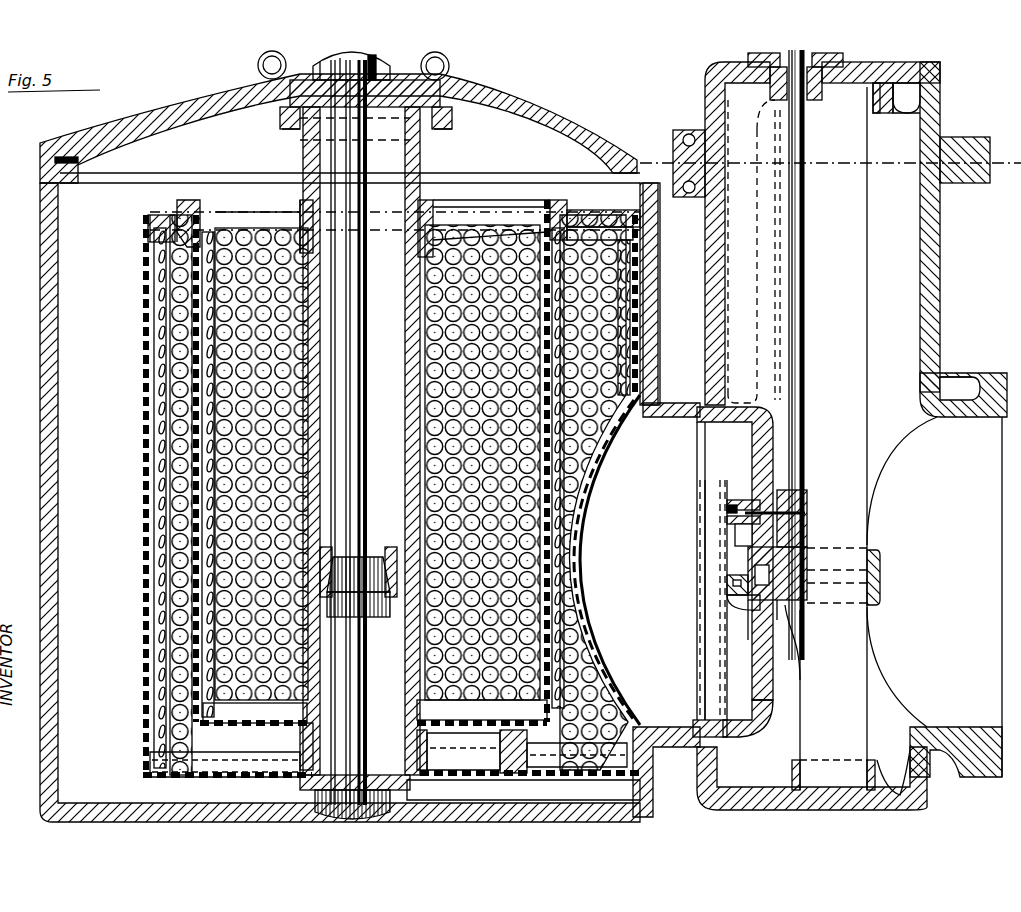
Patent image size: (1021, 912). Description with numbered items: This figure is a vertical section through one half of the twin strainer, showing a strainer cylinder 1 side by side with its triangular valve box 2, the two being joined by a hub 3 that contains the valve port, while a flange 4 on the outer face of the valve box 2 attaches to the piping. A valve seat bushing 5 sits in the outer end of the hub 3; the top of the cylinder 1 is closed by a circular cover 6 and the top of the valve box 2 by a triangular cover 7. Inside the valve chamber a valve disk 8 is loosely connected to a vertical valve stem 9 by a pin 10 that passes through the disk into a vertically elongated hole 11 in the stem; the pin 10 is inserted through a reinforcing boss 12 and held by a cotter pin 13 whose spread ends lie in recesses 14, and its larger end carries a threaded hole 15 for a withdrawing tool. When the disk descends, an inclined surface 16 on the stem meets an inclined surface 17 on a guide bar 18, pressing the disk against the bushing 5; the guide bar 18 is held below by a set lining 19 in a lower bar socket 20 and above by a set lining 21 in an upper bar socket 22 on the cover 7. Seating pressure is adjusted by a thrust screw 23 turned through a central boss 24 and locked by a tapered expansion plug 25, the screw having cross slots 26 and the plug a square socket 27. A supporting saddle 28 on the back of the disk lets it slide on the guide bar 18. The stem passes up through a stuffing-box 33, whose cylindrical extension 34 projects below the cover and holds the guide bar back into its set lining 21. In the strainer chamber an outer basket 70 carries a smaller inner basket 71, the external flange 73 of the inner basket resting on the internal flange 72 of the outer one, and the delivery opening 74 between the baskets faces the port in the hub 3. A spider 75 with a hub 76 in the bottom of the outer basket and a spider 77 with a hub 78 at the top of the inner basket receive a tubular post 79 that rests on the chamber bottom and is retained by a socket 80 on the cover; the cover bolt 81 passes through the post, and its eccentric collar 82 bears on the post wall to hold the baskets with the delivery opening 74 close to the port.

The cylinder 1 is at (40, 358).
The valve box 2 is at (900, 312).
The hub 3 is at (676, 400).
The flange 4 is at (981, 380).
The valve seat bushing 5 is at (700, 430).
The circular cover 6 is at (572, 120).
The triangular cover 7 is at (700, 90).
The valve disk 8 is at (748, 688).
The valve stem 9 is at (804, 371).
The pin 10 is at (806, 510).
The vertically elongated hole 11 is at (806, 518).
The reinforcing boss 12 is at (735, 495).
The cotter pin 13 is at (740, 533).
The recess 14 is at (780, 545).
The threaded hole 15 is at (730, 508).
The inclined surface 16 is at (803, 652).
The inclined surface 17 is at (785, 622).
The guide bar 18 is at (812, 710).
The set lining 19 is at (883, 752).
The lower bar socket 20 is at (886, 763).
The set lining 21 is at (873, 95).
The upper bar socket 22 is at (905, 113).
The thrust screw 23 is at (740, 598).
The central boss 24 is at (750, 605).
The tapered expansion plug 25 is at (750, 588).
The cross slot 26 is at (730, 578).
The square socket 27 is at (733, 583).
The supporting saddle 28 is at (866, 576).
The stuffing-box 33 is at (850, 58).
The cylindrical extension 34 is at (740, 72).
The outer basket 70 is at (146, 432).
The inner basket 71 is at (196, 472).
The internal flange 72 is at (149, 212).
The external flange 73 is at (192, 212).
The delivery opening 74 is at (598, 500).
The spider 75 is at (200, 770).
The hub 76 is at (282, 770).
The spider 77 is at (246, 210).
The hub 78 is at (304, 210).
The tubular post 79 is at (412, 156).
The socket 80 is at (436, 139).
The bolt 81 is at (366, 196).
The eccentric collar 82 is at (383, 558).